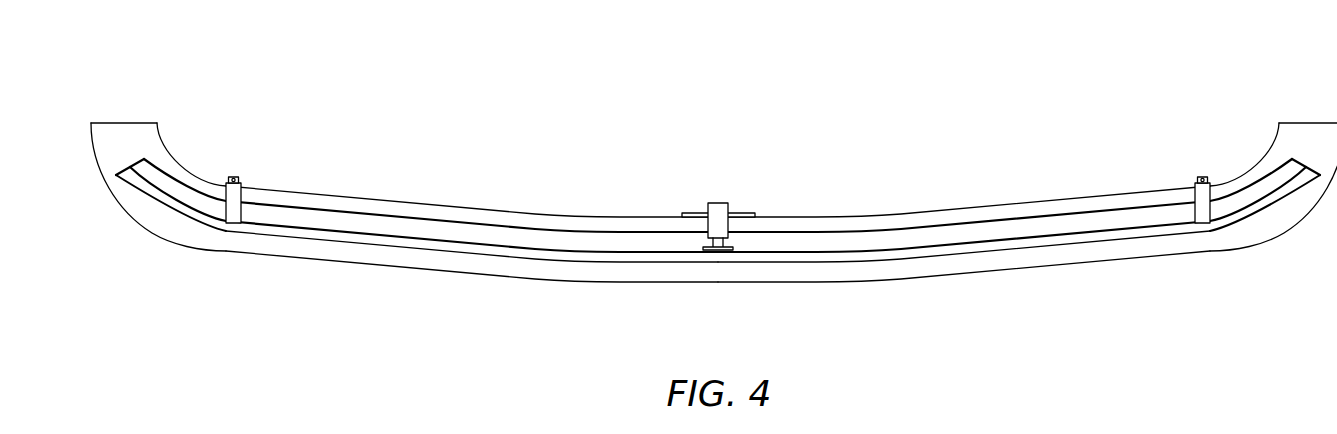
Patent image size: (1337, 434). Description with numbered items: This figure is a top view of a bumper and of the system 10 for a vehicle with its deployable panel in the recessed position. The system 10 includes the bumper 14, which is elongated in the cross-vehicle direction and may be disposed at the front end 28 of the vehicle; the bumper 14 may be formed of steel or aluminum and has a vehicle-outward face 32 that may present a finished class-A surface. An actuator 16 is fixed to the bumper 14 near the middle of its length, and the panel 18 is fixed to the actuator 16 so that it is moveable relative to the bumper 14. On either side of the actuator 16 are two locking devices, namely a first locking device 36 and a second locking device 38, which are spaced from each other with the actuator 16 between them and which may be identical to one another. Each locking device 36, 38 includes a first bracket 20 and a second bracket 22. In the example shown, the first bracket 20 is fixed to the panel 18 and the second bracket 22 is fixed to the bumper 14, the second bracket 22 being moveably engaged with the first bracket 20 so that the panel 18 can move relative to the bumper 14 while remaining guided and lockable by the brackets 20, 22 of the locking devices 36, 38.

The system 10 is at (1254, 234).
The bumper 14 is at (1312, 138).
The actuator 16 is at (714, 190).
The panel 18 is at (1067, 242).
The first bracket 20 is at (233, 212).
The second bracket 22 is at (234, 176).
The front end 28 is at (651, 287).
The vehicle-outward face 32 is at (895, 281).
The first locking device 36 is at (718, 152).
The second locking device 38 is at (245, 170).